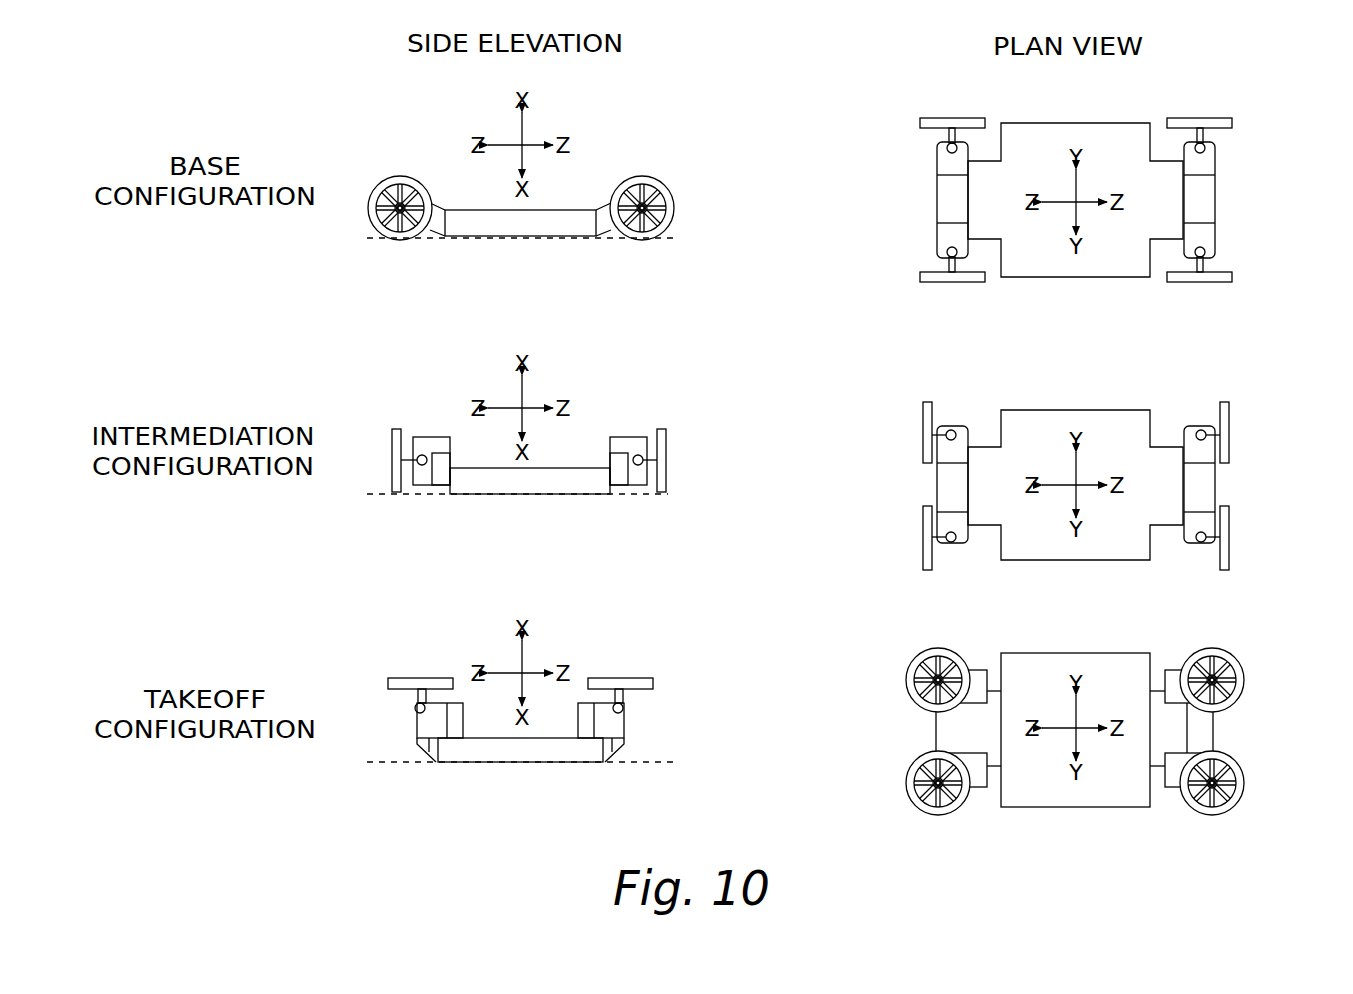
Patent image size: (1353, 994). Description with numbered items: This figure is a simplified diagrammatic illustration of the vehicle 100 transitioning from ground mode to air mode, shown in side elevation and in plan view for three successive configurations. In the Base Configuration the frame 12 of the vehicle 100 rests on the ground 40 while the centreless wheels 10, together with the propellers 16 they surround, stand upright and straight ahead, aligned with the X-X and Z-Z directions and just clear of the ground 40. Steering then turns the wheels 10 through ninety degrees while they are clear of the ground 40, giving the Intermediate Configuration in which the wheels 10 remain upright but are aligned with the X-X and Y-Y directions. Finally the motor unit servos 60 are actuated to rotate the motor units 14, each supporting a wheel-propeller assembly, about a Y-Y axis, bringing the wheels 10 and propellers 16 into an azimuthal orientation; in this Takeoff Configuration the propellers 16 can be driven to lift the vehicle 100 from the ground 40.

The centreless wheel 10 is at (391, 166).
The frame 12 is at (520, 238).
The motor unit 14 is at (436, 440).
The propeller 16 is at (399, 240).
The ground 40 is at (673, 237).
The motor unit servo 60 is at (440, 455).
The vehicle 100 is at (826, 463).